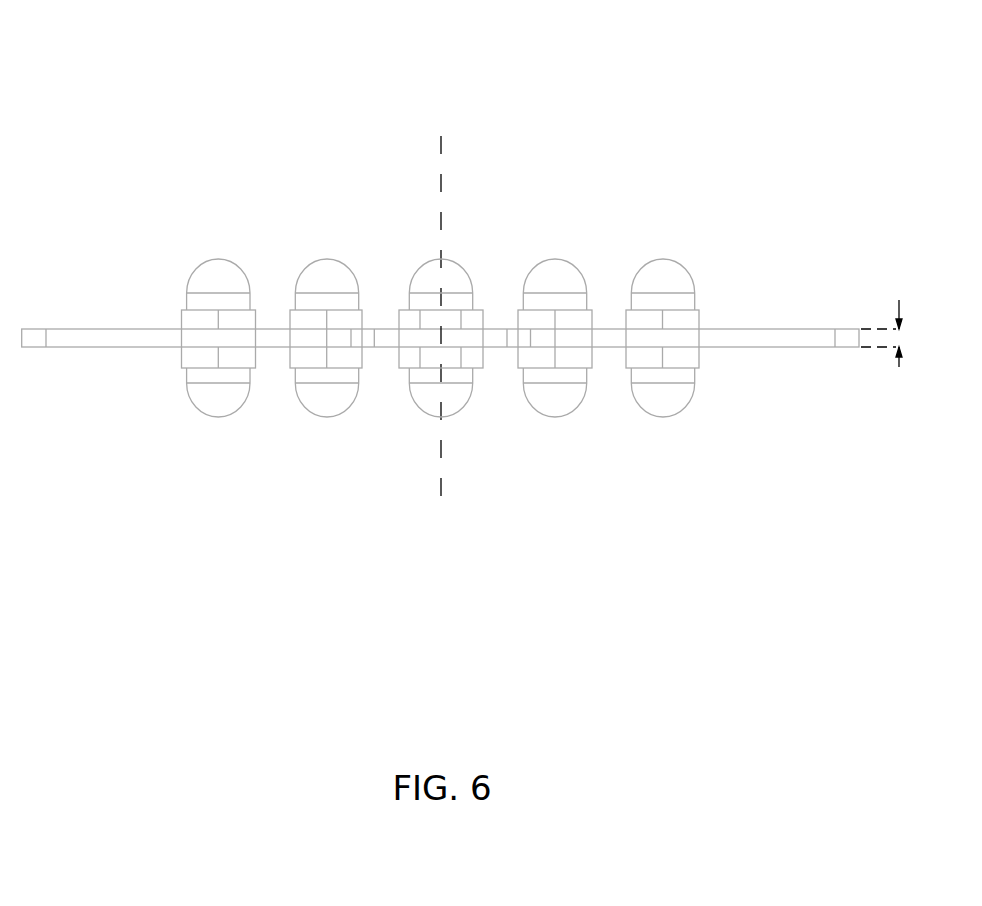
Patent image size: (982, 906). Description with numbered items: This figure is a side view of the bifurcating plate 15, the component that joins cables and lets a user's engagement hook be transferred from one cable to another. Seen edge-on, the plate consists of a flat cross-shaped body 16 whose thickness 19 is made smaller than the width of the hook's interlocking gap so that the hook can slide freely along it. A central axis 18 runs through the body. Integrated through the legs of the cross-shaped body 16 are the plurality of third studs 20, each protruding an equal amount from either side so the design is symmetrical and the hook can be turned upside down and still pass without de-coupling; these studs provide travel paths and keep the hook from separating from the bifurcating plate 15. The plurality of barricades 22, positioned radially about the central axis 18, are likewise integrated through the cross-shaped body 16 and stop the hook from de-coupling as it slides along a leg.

The bifurcating plate 15 is at (453, 100).
The cross-shaped body 16 is at (80, 340).
The central axis 18 is at (442, 144).
The thickness 19 is at (899, 366).
The plurality of third studs 20 is at (327, 270).
The plurality of barricades 22 is at (221, 270).